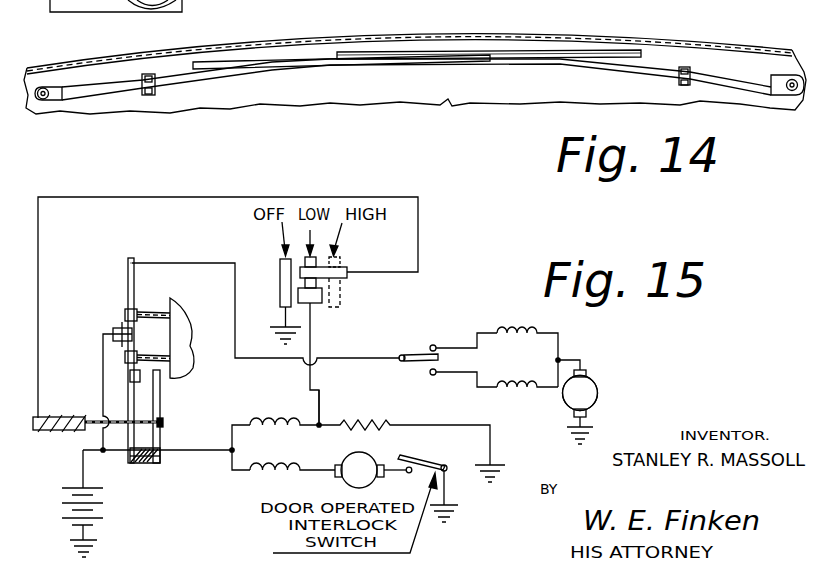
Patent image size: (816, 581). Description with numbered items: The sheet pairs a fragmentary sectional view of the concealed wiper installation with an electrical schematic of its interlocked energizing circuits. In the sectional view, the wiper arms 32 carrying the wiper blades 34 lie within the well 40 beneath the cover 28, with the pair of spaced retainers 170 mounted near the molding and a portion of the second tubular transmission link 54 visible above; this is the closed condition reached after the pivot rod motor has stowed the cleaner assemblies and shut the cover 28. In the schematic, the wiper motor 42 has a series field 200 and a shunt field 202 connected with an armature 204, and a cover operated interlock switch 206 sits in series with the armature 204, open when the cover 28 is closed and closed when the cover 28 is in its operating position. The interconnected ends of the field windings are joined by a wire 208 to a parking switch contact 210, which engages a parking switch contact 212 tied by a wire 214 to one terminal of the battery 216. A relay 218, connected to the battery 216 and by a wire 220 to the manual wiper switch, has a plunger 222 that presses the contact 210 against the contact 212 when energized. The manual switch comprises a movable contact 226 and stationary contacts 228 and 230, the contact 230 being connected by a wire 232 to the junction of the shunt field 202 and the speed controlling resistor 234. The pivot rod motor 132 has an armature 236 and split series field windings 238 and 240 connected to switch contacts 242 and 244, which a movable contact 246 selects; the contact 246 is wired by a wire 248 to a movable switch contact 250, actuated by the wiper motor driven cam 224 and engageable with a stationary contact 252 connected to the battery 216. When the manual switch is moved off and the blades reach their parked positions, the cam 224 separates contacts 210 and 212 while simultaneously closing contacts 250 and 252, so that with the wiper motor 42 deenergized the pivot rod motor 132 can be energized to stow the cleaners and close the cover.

In FIG. 14, the second tubular transmission link 54 is at (82, 12).
In FIG. 14, the cover 28 is at (534, 46).
In FIG. 14, the well 40 is at (733, 56).
In FIG. 14, the wiper arms 32 is at (197, 80).
In FIG. 14, the wiper blades 34 is at (238, 62).
In FIG. 14, the retainers 170 is at (146, 96).
In FIG. 15, the wire 220 is at (191, 196).
In FIG. 15, the movable contact 226 is at (284, 266).
In FIG. 15, the stationary contact 228 is at (348, 272).
In FIG. 15, the stationary contact 230 is at (317, 304).
In FIG. 15, the wire 248 is at (366, 358).
In FIG. 15, the movable contact 246 is at (410, 355).
In FIG. 15, the switch contact 244 is at (436, 345).
In FIG. 15, the switch contact 242 is at (436, 376).
In FIG. 15, the split series field winding 240 is at (533, 330).
In FIG. 15, the split series field winding 238 is at (532, 392).
In FIG. 15, the pivot rod motor 132 is at (598, 388).
In FIG. 15, the armature 236 is at (594, 402).
In FIG. 15, the plunger 222 is at (163, 423).
In FIG. 15, the parking switch contact 210 is at (162, 447).
In FIG. 15, the parking switch contact 212 is at (132, 455).
In FIG. 15, the movable switch contact 250 is at (132, 334).
In FIG. 15, the stationary contact 252 is at (119, 326).
In FIG. 15, the cam 224 is at (188, 314).
In FIG. 15, the relay 218 is at (63, 416).
In FIG. 15, the wire 214 is at (93, 453).
In FIG. 15, the battery 216 is at (100, 506).
In FIG. 15, the wire 208 is at (215, 453).
In FIG. 15, the shunt field 202 is at (278, 417).
In FIG. 15, the series field 200 is at (263, 475).
In FIG. 15, the wire 232 is at (320, 390).
In FIG. 15, the speed controlling resistor 234 is at (369, 423).
In FIG. 15, the wiper motor 42 is at (345, 460).
In FIG. 15, the armature 204 is at (367, 458).
In FIG. 15, the interlock switch 206 is at (443, 461).